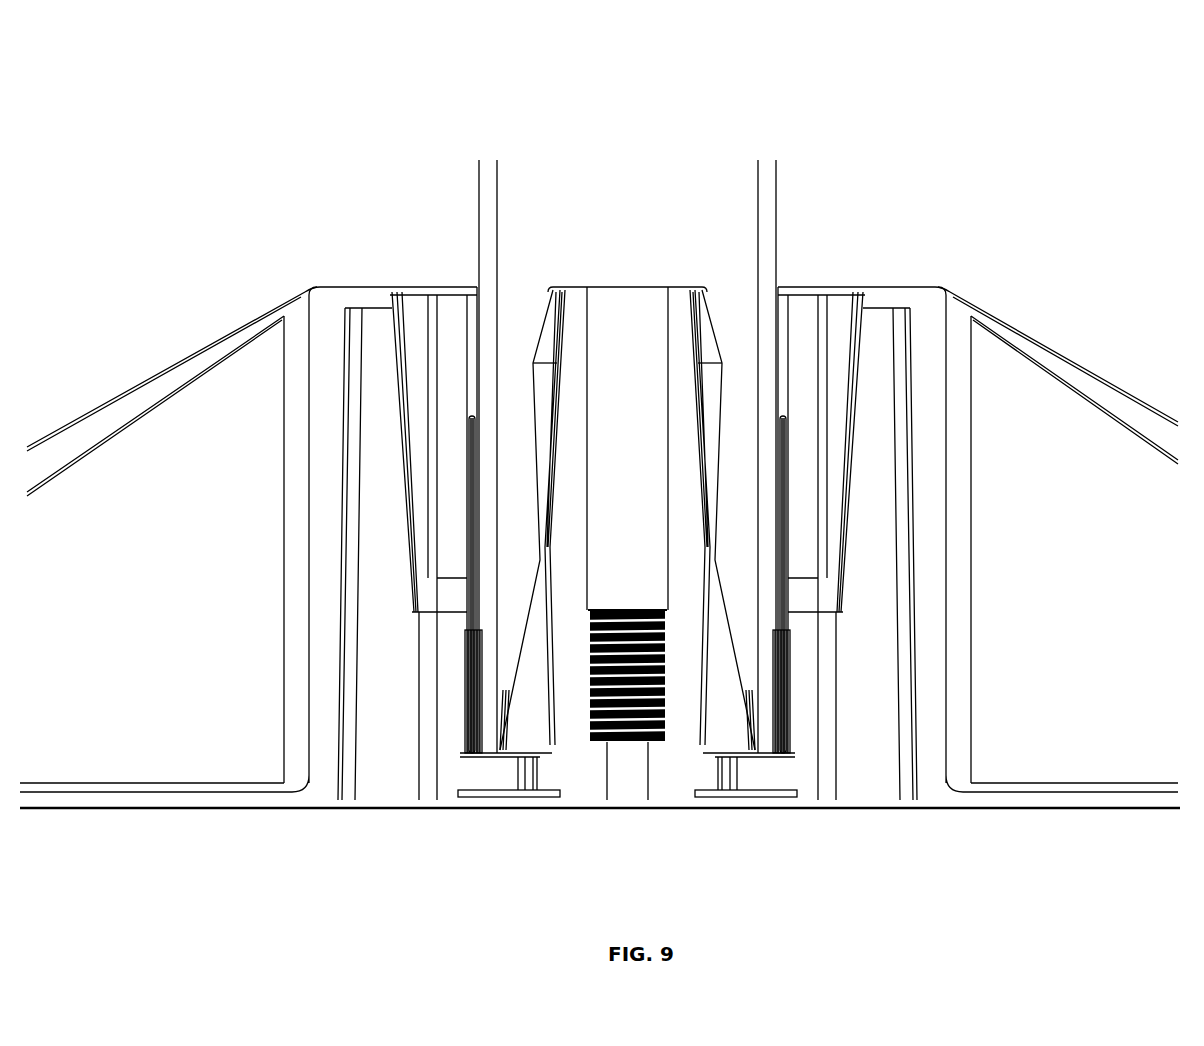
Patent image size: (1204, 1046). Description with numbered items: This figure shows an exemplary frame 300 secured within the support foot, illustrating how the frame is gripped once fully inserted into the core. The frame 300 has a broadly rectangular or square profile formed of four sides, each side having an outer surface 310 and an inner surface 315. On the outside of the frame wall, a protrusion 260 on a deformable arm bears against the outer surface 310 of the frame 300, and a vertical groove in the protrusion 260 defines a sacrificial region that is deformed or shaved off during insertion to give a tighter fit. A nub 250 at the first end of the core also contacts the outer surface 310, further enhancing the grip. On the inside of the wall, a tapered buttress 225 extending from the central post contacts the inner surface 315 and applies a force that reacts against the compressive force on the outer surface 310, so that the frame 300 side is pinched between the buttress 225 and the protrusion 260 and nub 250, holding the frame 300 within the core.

The frame 300 is at (600, 469).
The outer surface 310 is at (777, 174).
The protrusion 260 is at (780, 332).
The nub 250 is at (472, 718).
The inner surface 315 is at (497, 683).
The buttress 225 is at (508, 717).